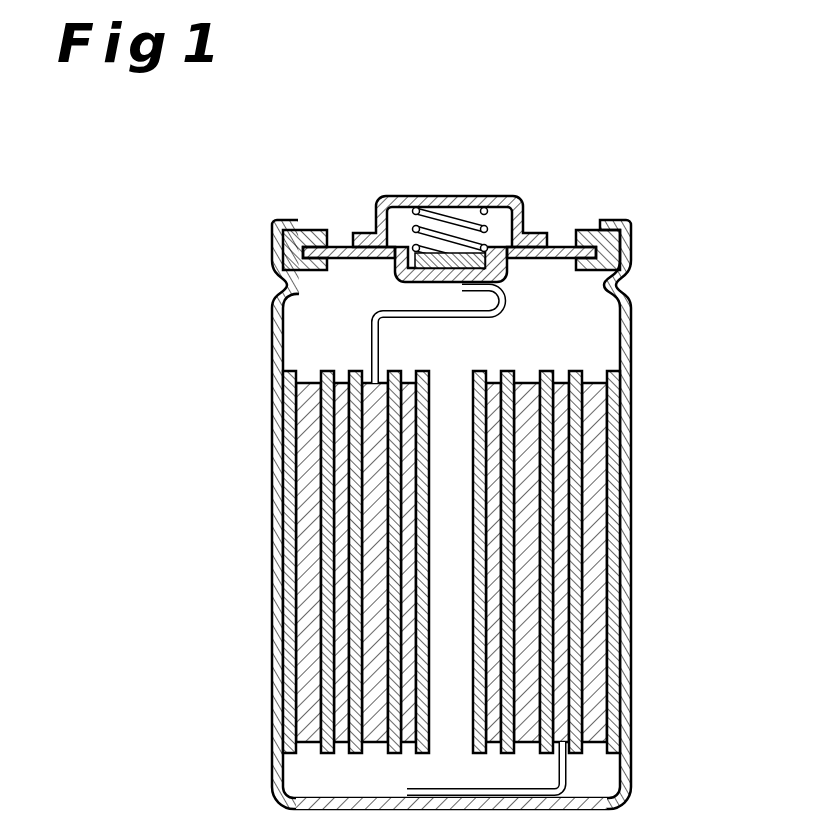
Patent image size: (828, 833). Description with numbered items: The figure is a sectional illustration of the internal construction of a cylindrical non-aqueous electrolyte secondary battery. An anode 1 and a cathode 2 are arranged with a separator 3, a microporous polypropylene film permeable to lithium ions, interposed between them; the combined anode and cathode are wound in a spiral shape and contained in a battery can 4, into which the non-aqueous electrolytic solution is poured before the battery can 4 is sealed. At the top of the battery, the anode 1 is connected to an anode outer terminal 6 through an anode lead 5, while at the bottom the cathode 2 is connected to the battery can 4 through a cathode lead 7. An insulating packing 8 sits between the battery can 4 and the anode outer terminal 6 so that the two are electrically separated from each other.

The anode 1 is at (595, 495).
The cathode 2 is at (560, 647).
The separator 3 is at (578, 568).
The battery can 4 is at (631, 412).
The anode lead 5 is at (372, 337).
The anode outer terminal 6 is at (480, 197).
The cathode lead 7 is at (567, 773).
The insulating packing 8 is at (314, 231).